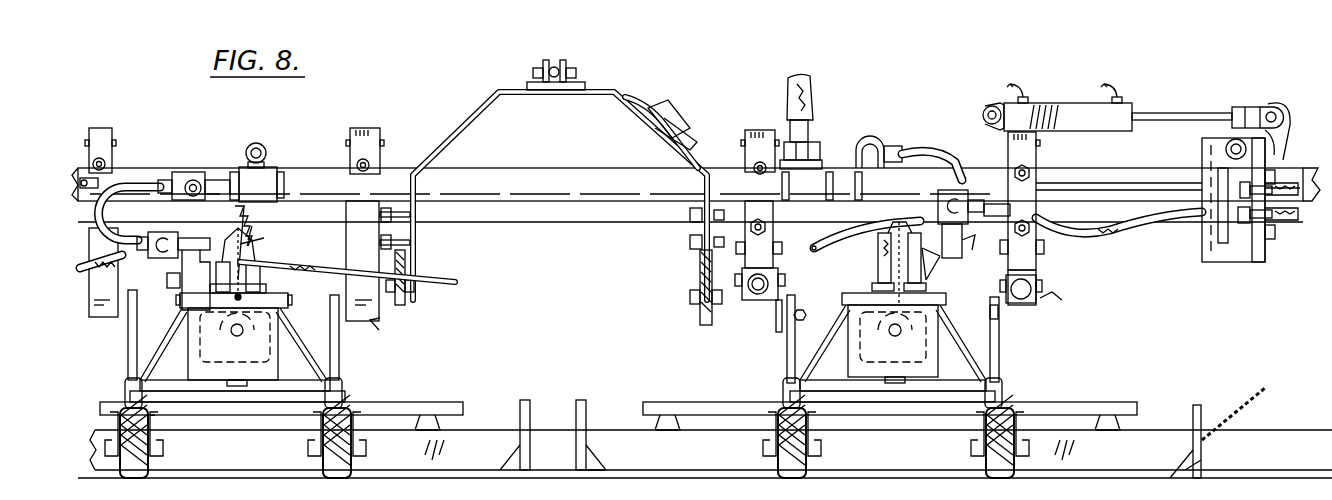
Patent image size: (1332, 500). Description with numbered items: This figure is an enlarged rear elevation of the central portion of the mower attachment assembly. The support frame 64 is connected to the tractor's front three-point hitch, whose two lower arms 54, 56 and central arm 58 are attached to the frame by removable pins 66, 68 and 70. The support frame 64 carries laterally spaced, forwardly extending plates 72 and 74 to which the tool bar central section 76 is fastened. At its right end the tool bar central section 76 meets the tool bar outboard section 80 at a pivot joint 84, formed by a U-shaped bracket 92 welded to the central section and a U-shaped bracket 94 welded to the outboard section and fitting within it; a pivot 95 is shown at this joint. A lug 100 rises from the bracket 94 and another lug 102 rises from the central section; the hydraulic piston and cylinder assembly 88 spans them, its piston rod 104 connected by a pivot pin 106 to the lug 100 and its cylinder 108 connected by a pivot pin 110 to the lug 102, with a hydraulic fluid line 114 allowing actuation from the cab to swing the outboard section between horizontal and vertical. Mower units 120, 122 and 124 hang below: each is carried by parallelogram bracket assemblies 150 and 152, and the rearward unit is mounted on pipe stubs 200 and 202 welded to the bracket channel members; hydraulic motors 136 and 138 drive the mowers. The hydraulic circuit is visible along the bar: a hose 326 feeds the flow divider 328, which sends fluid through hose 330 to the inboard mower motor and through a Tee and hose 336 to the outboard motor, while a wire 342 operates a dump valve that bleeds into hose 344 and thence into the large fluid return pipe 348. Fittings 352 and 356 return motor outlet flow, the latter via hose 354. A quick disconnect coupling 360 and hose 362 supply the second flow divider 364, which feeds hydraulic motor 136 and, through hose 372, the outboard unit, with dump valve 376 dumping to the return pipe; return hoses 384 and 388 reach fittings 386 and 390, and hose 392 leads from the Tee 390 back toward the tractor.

The lower arm 54 is at (712, 325).
The lower arm 56 is at (398, 312).
The central arm 58 is at (560, 62).
The support frame 64 is at (480, 115).
The removable pin 66 is at (692, 302).
The removable pin 68 is at (412, 290).
The removable pin 70 is at (532, 72).
The forwardly extending plate 72 is at (690, 236).
The forwardly extending plate 74 is at (410, 241).
The tool bar central section 76 is at (567, 212).
The tool bar outboard section 80 is at (1302, 222).
The pivot joint 84 is at (1232, 270).
The hydraulic piston and cylinder assembly 88 is at (1080, 92).
The U-shaped bracket 92 is at (1202, 258).
The U-shaped bracket 94 is at (1255, 266).
The pivot 95 is at (1225, 147).
The lug 100 is at (1280, 98).
The lug 102 is at (1000, 150).
The piston rod 104 is at (1170, 110).
The pivot pin 106 is at (1275, 104).
The cylinder 108 is at (1075, 100).
The pivot pin 110 is at (990, 106).
The hydraulic fluid line 114 is at (1018, 84).
The mower unit 120 is at (1240, 418).
The mower unit 122 is at (605, 425).
The mower unit 124 is at (90, 445).
The hydraulic motor 136 is at (928, 353).
The hydraulic motor 138 is at (268, 355).
The parallelogram bracket assembly 150 is at (378, 326).
The parallelogram bracket assembly 152 is at (85, 286).
The pipe stub 200 is at (1028, 306).
The pipe stub 202 is at (752, 308).
The hose 326 is at (460, 276).
The flow divider 328 is at (190, 268).
The hose 330 is at (268, 250).
The hose 336 is at (78, 264).
The wire 342 is at (640, 100).
The hose 344 is at (92, 218).
The large fluid return pipe 348 is at (565, 185).
The fitting 352 is at (268, 188).
The hose 354 is at (80, 183).
The fitting 356 is at (193, 178).
The quick disconnect coupling 360 is at (240, 220).
The hose 362 is at (815, 250).
The flow divider 364 is at (945, 262).
The hose 372 is at (1085, 238).
The dump valve 376 is at (950, 258).
The hose 384 is at (905, 145).
The fitting 386 is at (866, 150).
The hose 388 is at (1158, 165).
The Tee 390 is at (792, 182).
The hose 392 is at (800, 78).